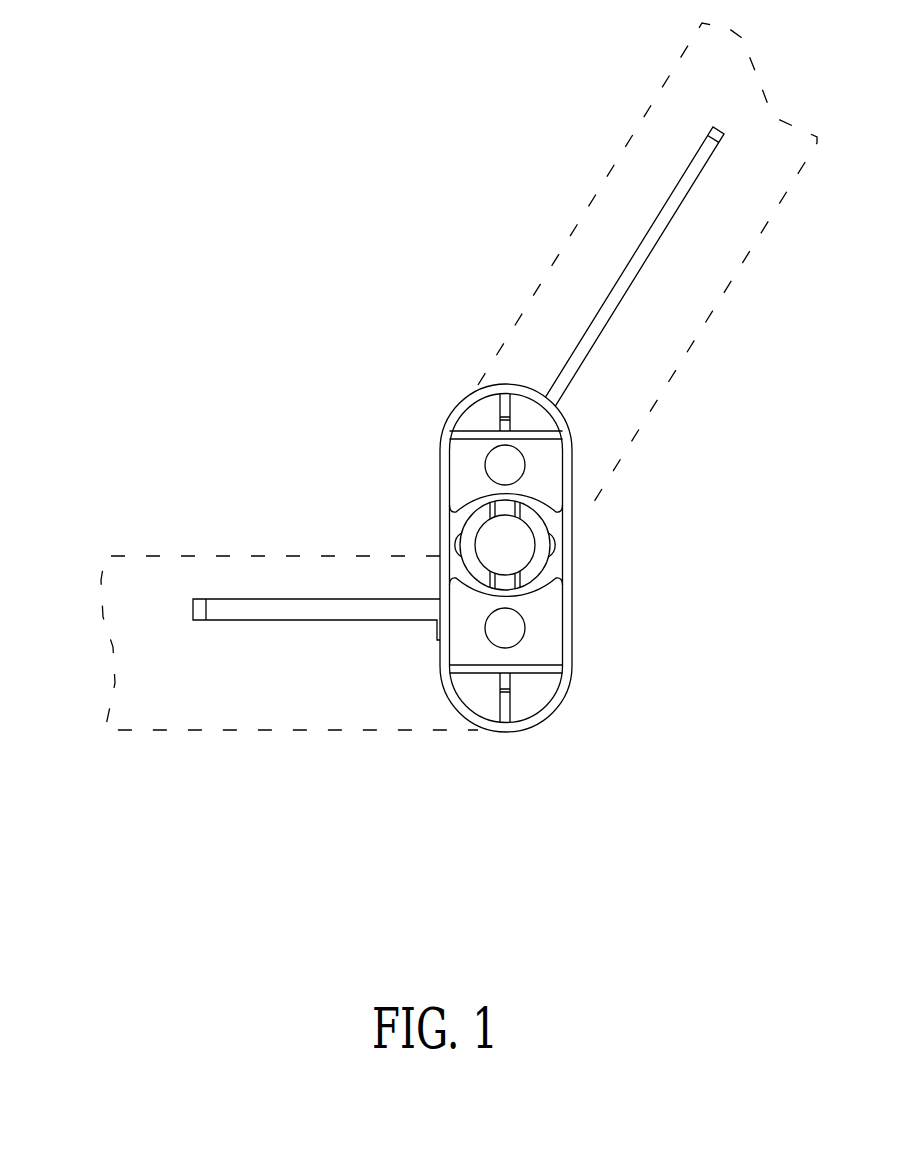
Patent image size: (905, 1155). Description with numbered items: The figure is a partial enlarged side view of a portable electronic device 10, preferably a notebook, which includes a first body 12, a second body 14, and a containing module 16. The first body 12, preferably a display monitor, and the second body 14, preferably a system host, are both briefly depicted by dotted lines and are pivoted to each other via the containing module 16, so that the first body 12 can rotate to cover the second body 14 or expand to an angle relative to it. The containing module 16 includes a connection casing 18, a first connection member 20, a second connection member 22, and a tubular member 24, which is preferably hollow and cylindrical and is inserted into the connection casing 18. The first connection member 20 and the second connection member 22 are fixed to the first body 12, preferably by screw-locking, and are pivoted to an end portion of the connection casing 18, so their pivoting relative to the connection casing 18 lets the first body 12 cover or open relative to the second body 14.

The portable electronic device 10 is at (228, 105).
The first body 12 is at (612, 165).
The second body 14 is at (153, 555).
The containing module 16 is at (428, 437).
The connection casing 18 is at (553, 529).
The first connection member 20 is at (617, 298).
The second connection member 22 is at (258, 608).
The tubular member 24 is at (533, 565).